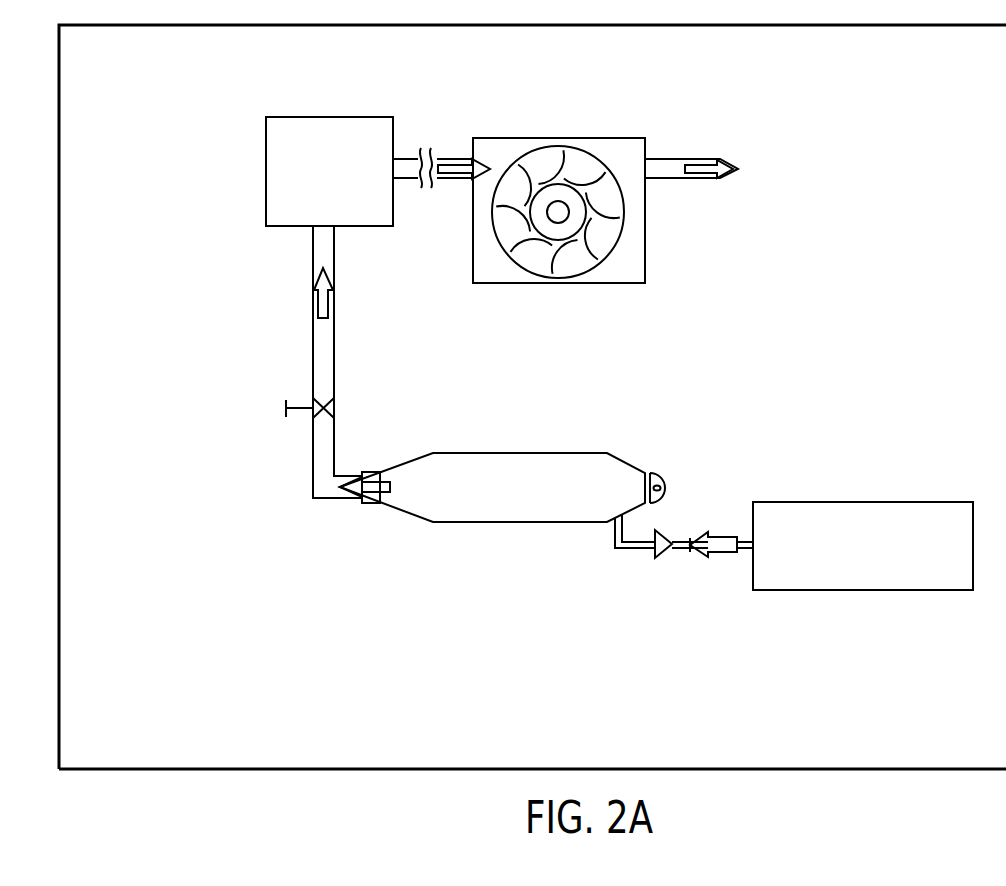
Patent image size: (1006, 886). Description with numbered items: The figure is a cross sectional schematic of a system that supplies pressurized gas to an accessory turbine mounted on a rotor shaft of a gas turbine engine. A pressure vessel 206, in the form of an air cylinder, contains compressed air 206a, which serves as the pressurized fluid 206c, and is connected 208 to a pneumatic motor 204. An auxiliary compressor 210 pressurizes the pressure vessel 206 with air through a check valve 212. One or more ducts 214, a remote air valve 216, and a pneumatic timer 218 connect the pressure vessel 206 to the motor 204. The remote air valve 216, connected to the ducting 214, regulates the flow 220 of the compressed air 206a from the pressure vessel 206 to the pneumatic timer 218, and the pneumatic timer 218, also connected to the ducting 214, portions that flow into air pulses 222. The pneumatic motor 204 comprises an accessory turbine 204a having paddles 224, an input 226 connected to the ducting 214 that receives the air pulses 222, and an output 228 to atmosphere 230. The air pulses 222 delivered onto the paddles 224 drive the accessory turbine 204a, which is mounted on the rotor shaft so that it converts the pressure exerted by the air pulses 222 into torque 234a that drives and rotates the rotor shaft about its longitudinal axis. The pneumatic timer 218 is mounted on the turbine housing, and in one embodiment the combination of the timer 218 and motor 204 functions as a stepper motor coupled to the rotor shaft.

The pneumatic motor 204 is at (605, 209).
The accessory turbine 204a is at (558, 209).
The pressure vessel 206 is at (502, 556).
The compressed air 206a is at (502, 447).
The pressurized fluid 206c is at (530, 463).
The connection 208 is at (232, 577).
The auxiliary compressor 210 is at (890, 590).
The check valve 212 is at (665, 560).
The ducts 214 is at (313, 249).
The remote air valve 216 is at (283, 410).
The pneumatic timer 218 is at (262, 206).
The flow 220 is at (330, 305).
The air pulses 222 is at (437, 160).
The paddles 224 is at (590, 258).
The input 226 is at (454, 178).
The output 228 is at (707, 179).
The atmosphere 230 is at (757, 170).
The torque 234a is at (567, 203).